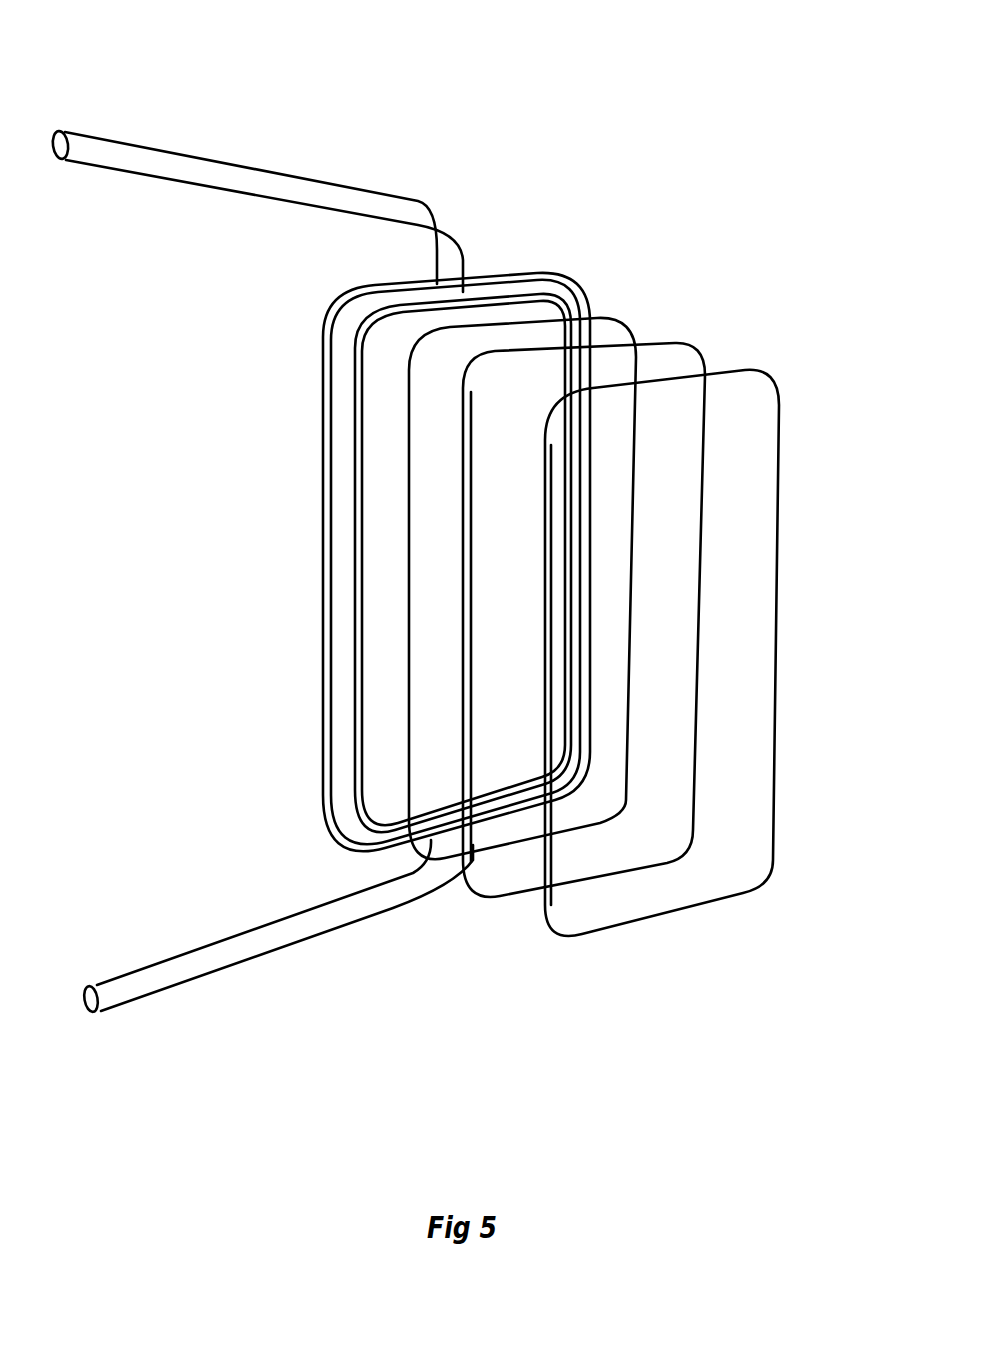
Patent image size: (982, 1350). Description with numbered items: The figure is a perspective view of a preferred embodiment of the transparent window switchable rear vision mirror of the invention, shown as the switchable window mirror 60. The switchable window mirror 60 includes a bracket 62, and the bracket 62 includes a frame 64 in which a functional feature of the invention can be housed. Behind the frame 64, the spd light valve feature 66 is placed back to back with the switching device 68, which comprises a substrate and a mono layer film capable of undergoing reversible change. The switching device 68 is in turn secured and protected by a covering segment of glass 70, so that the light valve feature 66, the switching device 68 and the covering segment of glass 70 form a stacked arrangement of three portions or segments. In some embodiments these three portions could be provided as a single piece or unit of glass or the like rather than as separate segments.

The switchable window mirror 60 is at (530, 188).
The bracket 62 is at (287, 185).
The frame 64 is at (335, 470).
The spd light valve feature 66 is at (603, 313).
The switching device 68 is at (682, 362).
The covering segment of glass 70 is at (677, 892).